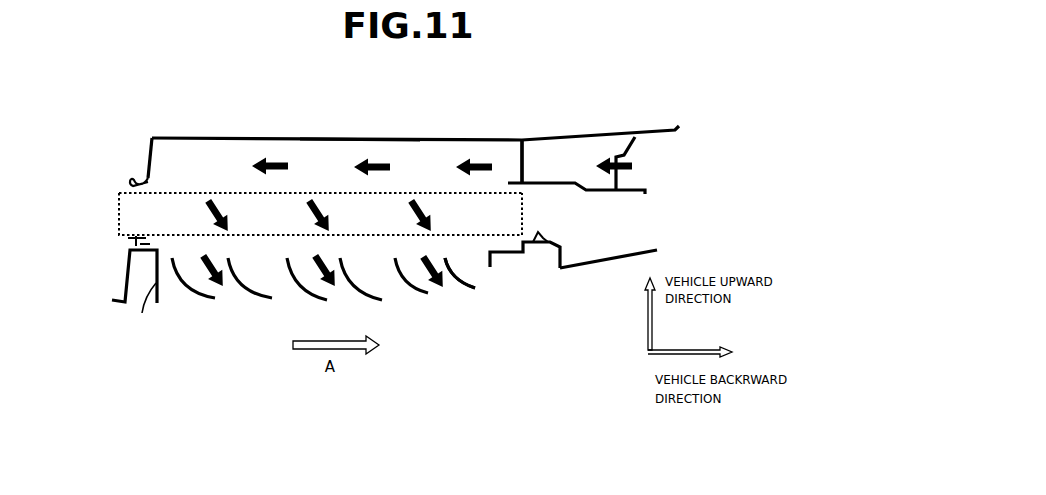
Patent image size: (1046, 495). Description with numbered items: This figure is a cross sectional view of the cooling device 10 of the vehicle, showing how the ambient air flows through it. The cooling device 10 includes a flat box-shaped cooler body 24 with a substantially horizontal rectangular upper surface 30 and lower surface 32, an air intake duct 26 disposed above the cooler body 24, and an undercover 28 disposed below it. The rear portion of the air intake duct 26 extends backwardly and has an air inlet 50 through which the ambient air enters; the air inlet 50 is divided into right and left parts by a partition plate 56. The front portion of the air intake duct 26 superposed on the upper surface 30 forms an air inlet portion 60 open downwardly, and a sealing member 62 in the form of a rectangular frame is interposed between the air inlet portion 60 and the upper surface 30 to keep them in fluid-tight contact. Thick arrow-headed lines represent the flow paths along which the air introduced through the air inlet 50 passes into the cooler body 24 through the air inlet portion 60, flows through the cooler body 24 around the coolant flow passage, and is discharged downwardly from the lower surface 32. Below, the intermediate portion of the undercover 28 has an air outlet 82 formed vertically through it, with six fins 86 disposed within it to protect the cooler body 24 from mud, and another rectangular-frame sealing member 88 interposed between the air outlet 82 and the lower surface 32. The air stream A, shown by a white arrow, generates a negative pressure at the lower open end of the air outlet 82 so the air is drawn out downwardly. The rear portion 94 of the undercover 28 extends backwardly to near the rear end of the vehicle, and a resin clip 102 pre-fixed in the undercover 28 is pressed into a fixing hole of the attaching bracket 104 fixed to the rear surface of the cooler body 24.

The cooling device 10 is at (644, 94).
The cooler body 24 is at (301, 204).
The air intake duct 26 is at (263, 120).
The undercover 28 is at (464, 296).
The upper surface 30 is at (418, 192).
The lower surface 32 is at (356, 236).
The air inlet 50 is at (603, 137).
The partition plate 56 is at (540, 156).
The air inlet portion 60 is at (355, 140).
The sealing member 62 is at (128, 174).
The air outlet 82 is at (152, 300).
The fins 86 is at (250, 300).
The sealing member 88 is at (128, 241).
The rear portion 94 is at (603, 258).
The resin clip 102 is at (540, 252).
The attaching bracket 104 is at (550, 238).